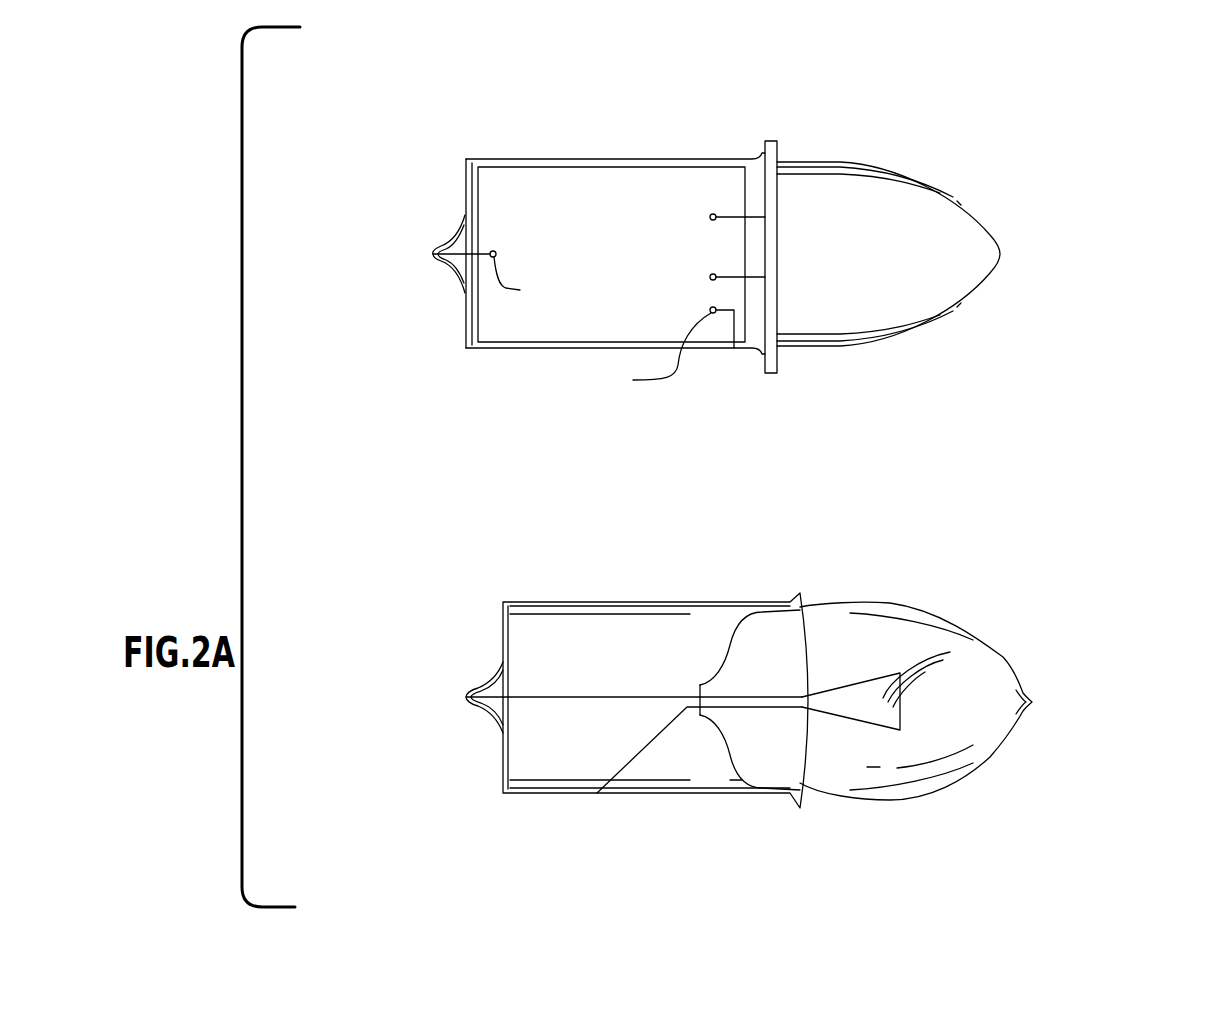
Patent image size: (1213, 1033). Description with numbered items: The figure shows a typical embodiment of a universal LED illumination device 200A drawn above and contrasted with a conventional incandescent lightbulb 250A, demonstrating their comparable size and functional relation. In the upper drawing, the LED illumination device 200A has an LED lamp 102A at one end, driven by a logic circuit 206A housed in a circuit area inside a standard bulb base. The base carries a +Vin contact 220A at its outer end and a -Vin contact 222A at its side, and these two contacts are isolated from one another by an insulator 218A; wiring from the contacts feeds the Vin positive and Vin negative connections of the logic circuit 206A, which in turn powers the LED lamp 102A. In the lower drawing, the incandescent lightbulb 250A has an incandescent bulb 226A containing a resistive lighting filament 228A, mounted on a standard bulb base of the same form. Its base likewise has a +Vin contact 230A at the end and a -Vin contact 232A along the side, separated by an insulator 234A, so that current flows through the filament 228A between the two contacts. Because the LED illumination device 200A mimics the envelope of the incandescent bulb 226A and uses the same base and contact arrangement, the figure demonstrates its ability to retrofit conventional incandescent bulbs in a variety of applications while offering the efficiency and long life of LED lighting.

The LED illumination device 200A is at (697, 158).
The insulator 218A is at (466, 162).
The +Vin contact 220A is at (434, 255).
The logic circuit 206A is at (650, 272).
The -Vin contact 222A is at (734, 348).
The LED lamp 102A is at (997, 233).
The incandescent lightbulb 250A is at (746, 804).
The insulator 234A is at (502, 750).
The +Vin contact 230A is at (470, 697).
The -Vin contact 232A is at (597, 793).
The incandescent bulb 226A is at (1080, 621).
The resistive lighting filament 228A is at (900, 673).